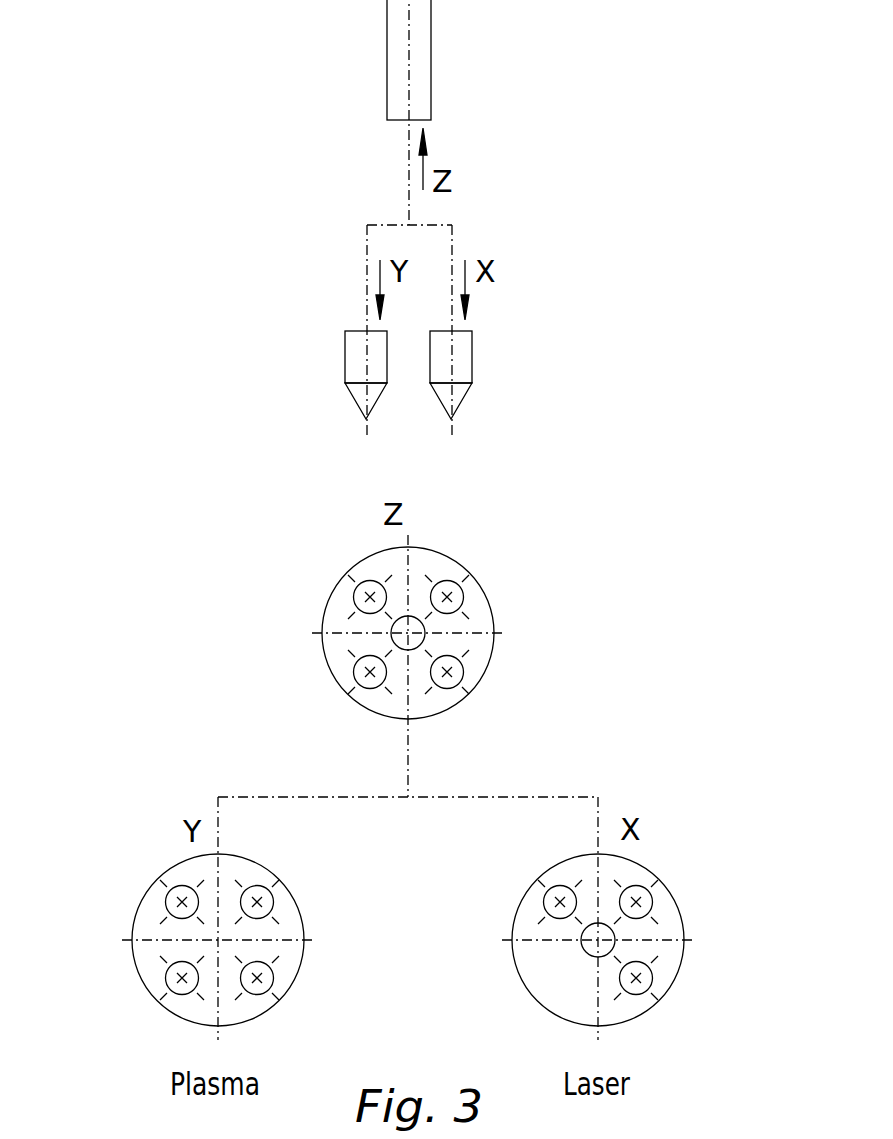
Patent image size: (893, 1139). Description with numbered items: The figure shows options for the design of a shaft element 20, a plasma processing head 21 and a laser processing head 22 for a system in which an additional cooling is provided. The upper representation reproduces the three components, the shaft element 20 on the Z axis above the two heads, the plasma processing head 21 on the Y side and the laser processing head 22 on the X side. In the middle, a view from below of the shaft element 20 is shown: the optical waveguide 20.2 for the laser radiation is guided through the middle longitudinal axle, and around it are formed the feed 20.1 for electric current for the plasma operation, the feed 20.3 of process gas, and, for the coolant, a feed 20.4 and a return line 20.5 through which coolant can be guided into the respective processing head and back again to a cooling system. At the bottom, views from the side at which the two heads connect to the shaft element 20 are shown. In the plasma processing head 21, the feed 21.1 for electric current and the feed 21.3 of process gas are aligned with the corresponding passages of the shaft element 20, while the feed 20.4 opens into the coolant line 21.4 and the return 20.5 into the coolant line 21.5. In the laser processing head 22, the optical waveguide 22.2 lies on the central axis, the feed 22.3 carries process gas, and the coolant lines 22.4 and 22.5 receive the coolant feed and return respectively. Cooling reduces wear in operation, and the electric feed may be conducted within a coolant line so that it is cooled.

The shaft element 20 is at (415, 60).
The plasma processing head 21 is at (362, 367).
The laser processing head 22 is at (455, 366).
The feed for electric current 20.1 is at (357, 593).
The optical waveguide 20.2 is at (395, 632).
The feed of process gas 20.3 is at (355, 672).
The feed for coolant 20.4 is at (457, 670).
The return line for coolant 20.5 is at (458, 595).
The feed for electric current 21.1 is at (168, 980).
The feed of process gas 21.3 is at (168, 898).
The coolant line 21.4 is at (267, 902).
The coolant line 21.5 is at (267, 980).
The optical waveguide 22.2 is at (585, 935).
The feed of process gas 22.3 is at (548, 898).
The coolant line 22.4 is at (643, 902).
The coolant line 22.5 is at (643, 980).